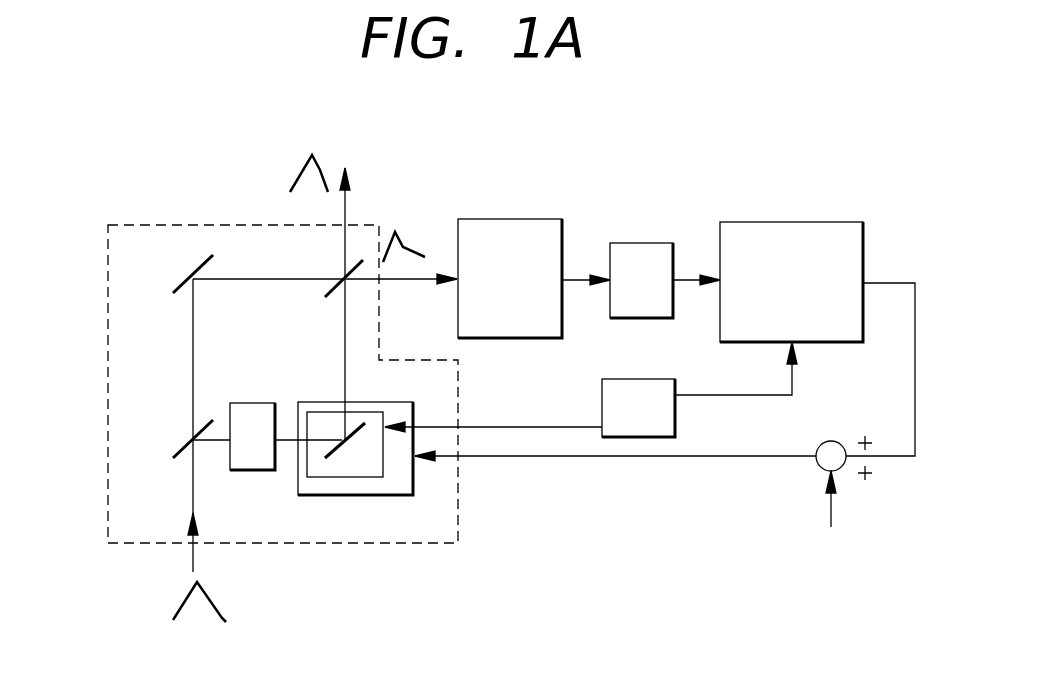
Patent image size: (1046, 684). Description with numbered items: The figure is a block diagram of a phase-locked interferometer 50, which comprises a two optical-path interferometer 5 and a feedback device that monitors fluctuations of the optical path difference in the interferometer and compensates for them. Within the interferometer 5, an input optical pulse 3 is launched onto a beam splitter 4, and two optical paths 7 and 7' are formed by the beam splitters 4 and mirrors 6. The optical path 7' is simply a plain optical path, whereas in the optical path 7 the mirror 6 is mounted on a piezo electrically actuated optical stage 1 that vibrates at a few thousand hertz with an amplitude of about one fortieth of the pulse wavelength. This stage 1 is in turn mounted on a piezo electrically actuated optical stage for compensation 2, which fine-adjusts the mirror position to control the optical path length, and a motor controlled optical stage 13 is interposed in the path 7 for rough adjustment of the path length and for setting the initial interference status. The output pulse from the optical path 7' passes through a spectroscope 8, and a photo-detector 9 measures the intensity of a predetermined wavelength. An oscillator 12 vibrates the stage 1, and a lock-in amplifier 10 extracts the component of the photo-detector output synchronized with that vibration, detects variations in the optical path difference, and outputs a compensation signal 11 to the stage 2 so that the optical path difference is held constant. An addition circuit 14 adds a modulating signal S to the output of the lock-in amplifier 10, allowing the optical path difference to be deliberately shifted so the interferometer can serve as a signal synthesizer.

The piezo electrically actuated optical stage 1 is at (363, 470).
The piezo electrically actuated optical stage for compensation 2 is at (395, 488).
The input optical pulse 3 is at (210, 598).
The beam splitter 4 is at (325, 290).
The two optical-path interferometer 5 is at (108, 242).
The mirror 6 is at (195, 262).
The optical path 7 is at (344, 282).
The optical path 7' is at (325, 274).
The spectroscope 8 is at (545, 219).
The photo-detector 9 is at (667, 242).
The lock-in amplifier 10 is at (863, 222).
The compensation signal 11 is at (665, 462).
The oscillator 12 is at (665, 379).
The motor controlled optical stage 13 is at (263, 403).
The addition circuit 14 is at (838, 443).
The phase-locked interferometer 50 is at (822, 608).